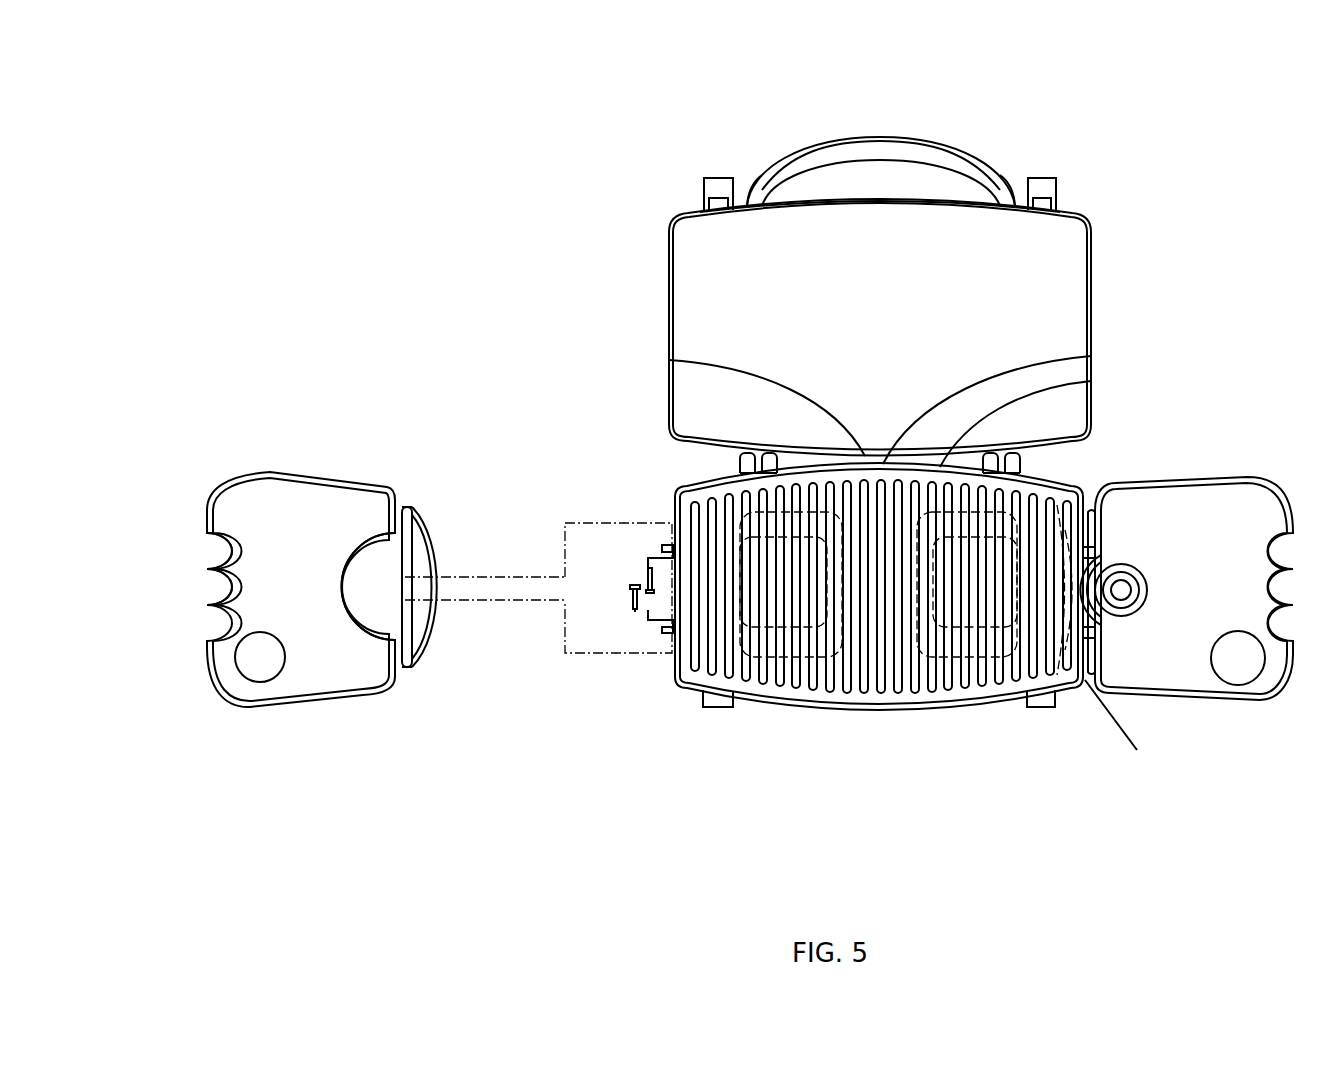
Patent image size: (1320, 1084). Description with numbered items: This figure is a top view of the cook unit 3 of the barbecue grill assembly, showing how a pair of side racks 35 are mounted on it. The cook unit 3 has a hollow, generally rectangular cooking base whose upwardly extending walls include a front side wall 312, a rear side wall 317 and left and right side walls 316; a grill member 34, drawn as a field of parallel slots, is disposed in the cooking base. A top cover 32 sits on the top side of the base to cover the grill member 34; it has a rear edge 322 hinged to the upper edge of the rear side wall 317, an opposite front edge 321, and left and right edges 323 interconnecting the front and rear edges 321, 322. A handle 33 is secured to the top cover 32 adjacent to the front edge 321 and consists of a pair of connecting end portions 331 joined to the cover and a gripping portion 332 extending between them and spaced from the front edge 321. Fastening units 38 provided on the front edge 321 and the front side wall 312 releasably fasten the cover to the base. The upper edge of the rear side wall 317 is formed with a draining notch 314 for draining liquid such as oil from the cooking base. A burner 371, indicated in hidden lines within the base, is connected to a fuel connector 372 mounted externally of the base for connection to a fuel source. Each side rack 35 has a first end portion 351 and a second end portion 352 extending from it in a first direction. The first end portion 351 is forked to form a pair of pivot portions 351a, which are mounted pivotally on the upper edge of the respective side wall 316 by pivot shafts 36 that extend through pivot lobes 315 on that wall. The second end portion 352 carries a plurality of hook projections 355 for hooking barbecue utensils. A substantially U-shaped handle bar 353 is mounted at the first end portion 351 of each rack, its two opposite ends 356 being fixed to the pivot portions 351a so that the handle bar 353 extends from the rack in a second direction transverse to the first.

The cook unit 3 is at (872, 722).
The front side wall 312 is at (950, 706).
The draining notch 314 is at (1051, 346).
The pivot lobes 315 is at (665, 545).
The left and right side walls 316 is at (677, 577).
The rear side wall 317 is at (1061, 385).
The top cover 32 is at (1078, 271).
The front edge 321 is at (895, 215).
The rear edge 322 is at (669, 360).
The left and right edges 323 is at (669, 297).
The handle 33 is at (903, 137).
The connecting end portions 331 is at (756, 198).
The gripping portion 332 is at (876, 149).
The grill member 34 is at (762, 692).
The side racks 35 is at (340, 703).
The first end portion 351 is at (379, 512).
The pivot portions 351a is at (405, 507).
The second end portion 352 is at (235, 600).
The handle bar 353 is at (437, 617).
The hook projections 355 is at (208, 555).
The opposite ends 356 is at (418, 527).
The pivot shafts 36 is at (633, 590).
The burner 371 is at (1044, 480).
The fuel connector 372 is at (1133, 582).
The fastening units 38 is at (1044, 187).